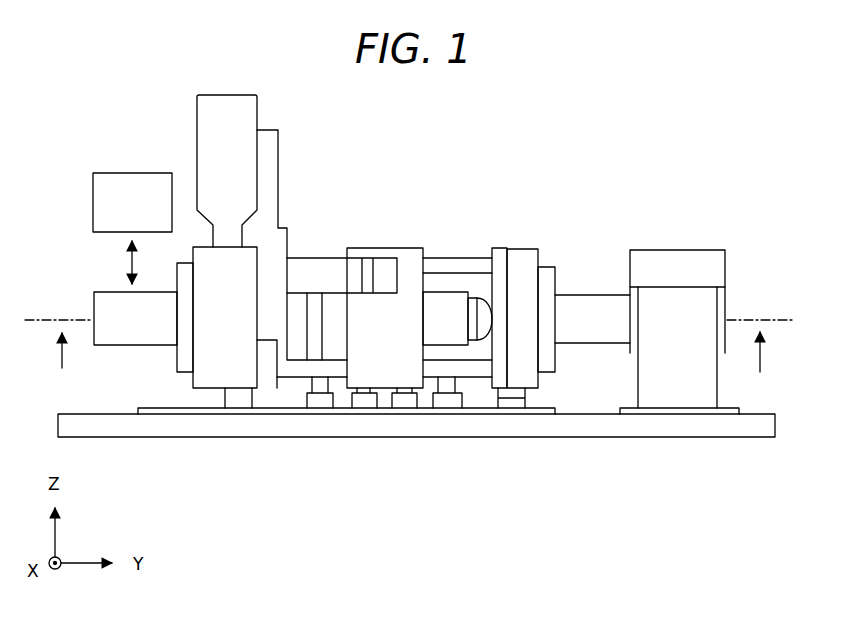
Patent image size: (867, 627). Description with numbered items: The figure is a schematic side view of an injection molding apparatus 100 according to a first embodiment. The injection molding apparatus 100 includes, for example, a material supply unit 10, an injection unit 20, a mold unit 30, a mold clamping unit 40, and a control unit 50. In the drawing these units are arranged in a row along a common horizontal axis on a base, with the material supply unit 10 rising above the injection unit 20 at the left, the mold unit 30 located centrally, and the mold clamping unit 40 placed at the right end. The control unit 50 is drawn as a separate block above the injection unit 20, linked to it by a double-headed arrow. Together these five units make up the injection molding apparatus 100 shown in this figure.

The injection molding apparatus 100 is at (656, 193).
The material supply unit 10 is at (168, 101).
The control unit 50 is at (121, 188).
The injection unit 20 is at (85, 303).
The mold unit 30 is at (467, 234).
The mold clamping unit 40 is at (703, 234).